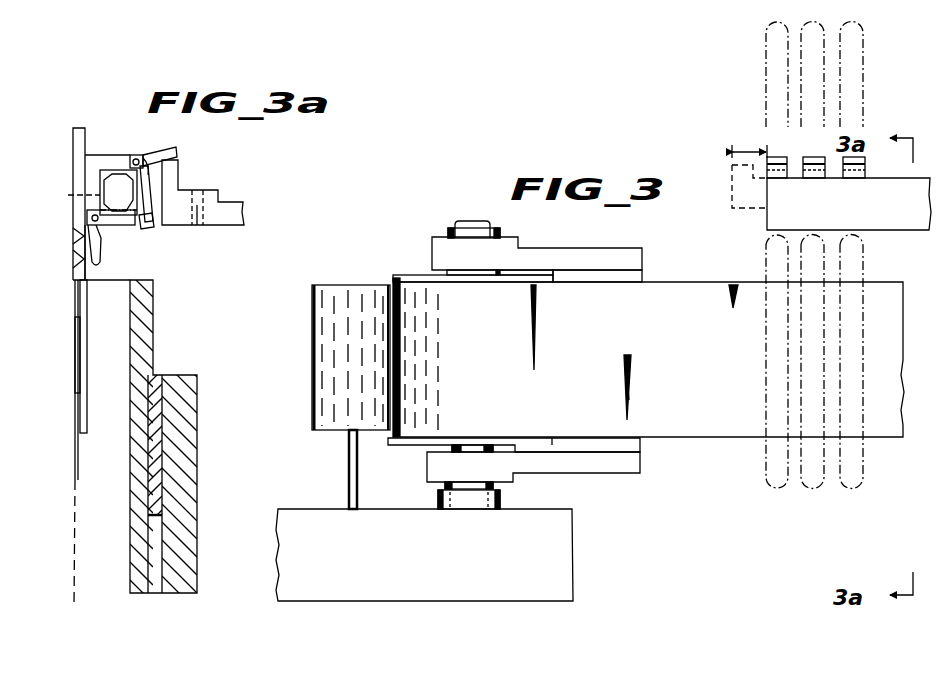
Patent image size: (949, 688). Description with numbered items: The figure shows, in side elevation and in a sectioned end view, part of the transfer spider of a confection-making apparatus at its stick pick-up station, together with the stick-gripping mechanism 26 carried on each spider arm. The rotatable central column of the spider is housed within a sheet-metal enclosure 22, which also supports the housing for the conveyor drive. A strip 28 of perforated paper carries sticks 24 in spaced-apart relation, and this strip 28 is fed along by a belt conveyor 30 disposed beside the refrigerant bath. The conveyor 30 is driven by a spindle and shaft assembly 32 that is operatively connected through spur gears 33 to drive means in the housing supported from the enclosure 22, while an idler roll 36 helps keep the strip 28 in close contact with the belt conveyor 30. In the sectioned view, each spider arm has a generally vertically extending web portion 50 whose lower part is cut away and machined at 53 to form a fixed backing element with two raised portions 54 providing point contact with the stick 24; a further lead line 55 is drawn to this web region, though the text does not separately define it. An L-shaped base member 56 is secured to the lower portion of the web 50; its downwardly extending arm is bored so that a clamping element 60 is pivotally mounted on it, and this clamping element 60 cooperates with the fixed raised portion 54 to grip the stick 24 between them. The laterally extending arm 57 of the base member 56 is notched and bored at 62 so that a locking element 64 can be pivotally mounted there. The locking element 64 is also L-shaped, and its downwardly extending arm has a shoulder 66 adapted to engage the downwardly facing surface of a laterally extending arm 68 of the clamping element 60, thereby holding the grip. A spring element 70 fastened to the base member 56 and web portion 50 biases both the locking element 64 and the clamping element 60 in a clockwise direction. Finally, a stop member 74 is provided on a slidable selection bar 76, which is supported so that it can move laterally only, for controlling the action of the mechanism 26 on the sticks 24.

In FIG. 3A, the enclosure 22 is at (196, 450).
In FIG. 3, the stick 24 is at (768, 258).
In FIG. 3A, the stick 24 is at (79, 452).
In FIG. 3A, the stick-gripping mechanism 26 is at (131, 248).
In FIG. 3, the strip of perforated paper 28 is at (691, 294).
In FIG. 3A, the strip of perforated paper 28 is at (87, 403).
In FIG. 3, the belt conveyor 30 is at (394, 407).
In FIG. 3, the spindle and shaft assembly 32 is at (447, 485).
In FIG. 3, the spur gears 33 is at (502, 500).
In FIG. 3, the idler roll 36 is at (351, 397).
In FIG. 3A, the vertically extending web portion 50 is at (73, 155).
In FIG. 3A, the cut-away machined portion 53 is at (72, 258).
In FIG. 3A, the raised portions 54 is at (72, 233).
In FIG. 3A, the center line 55 is at (70, 194).
In FIG. 3A, the L-shaped base member 56 is at (98, 156).
In FIG. 3A, the laterally extending arm of base member 57 is at (122, 156).
In FIG. 3A, the clamping element 60 is at (97, 255).
In FIG. 3, the notch and bore 62 is at (752, 151).
In FIG. 3A, the locking element 64 is at (150, 156).
In FIG. 3A, the shoulder 66 is at (160, 218).
In FIG. 3A, the laterally extending arm of clamping element 68 is at (122, 226).
In FIG. 3A, the spring element 70 is at (102, 195).
In FIG. 3, the stop member 74 is at (849, 193).
In FIG. 3A, the stop member 74 is at (183, 190).
In FIG. 3A, the slidable selection bar 76 is at (200, 215).